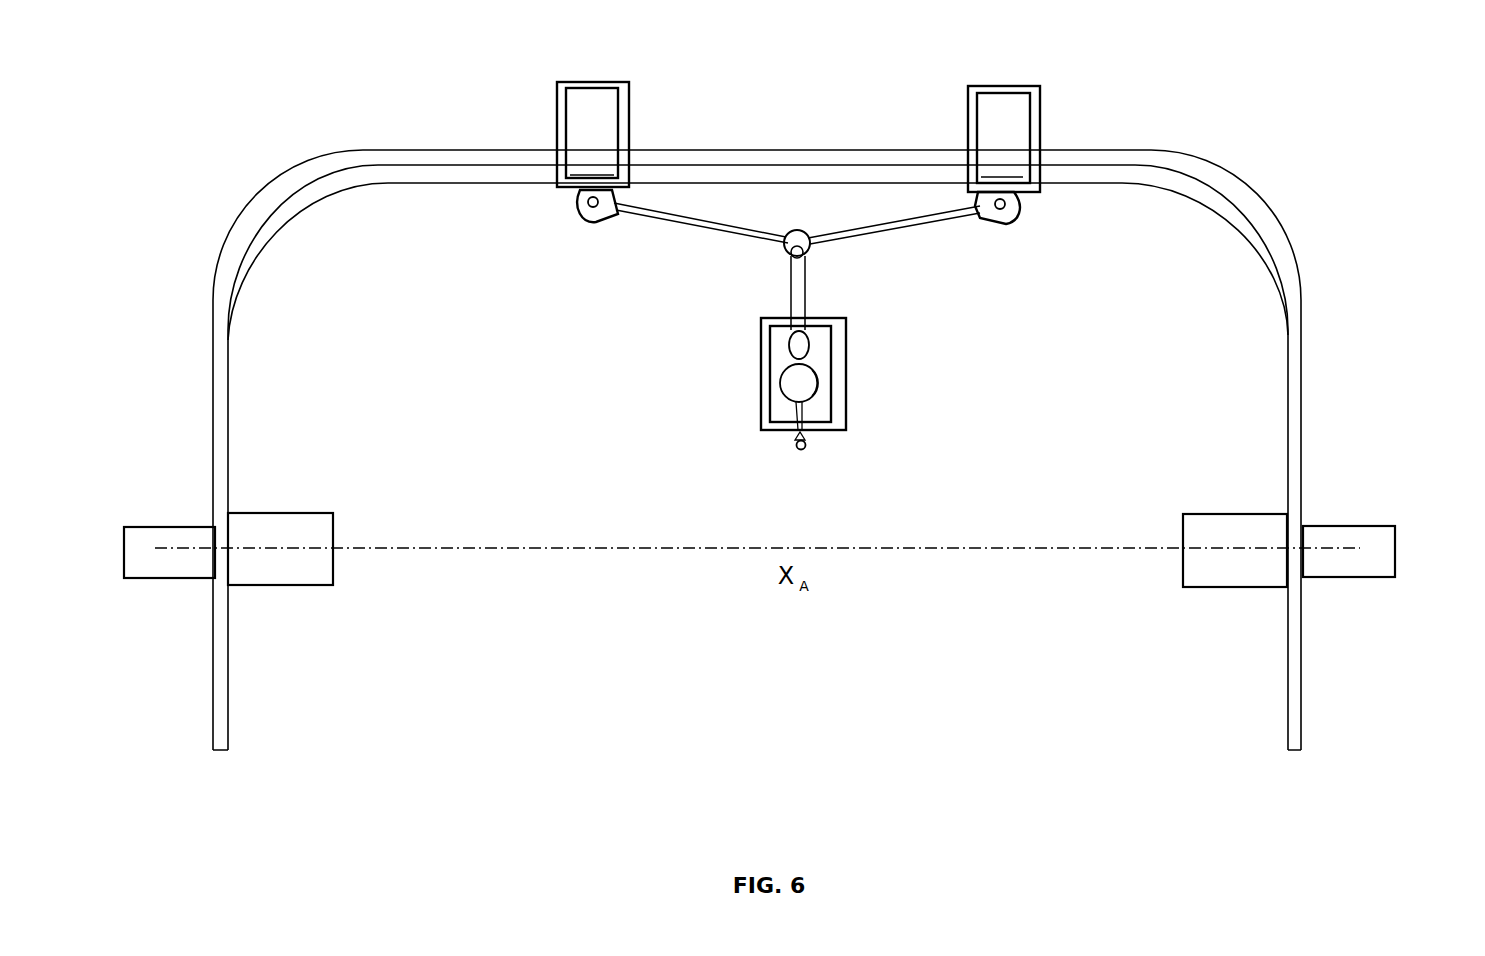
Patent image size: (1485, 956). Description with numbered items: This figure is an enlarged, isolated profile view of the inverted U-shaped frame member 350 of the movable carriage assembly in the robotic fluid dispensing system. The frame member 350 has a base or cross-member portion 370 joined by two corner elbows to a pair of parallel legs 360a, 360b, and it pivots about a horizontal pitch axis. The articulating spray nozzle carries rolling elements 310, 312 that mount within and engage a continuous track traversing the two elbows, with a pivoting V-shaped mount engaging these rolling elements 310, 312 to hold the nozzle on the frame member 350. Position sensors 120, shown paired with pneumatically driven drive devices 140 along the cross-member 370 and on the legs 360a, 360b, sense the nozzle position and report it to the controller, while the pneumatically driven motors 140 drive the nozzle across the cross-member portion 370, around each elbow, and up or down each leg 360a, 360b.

The position sensor 120 is at (617, 113).
The pneumatically driven drive device 140 is at (630, 161).
The rolling element 310 is at (578, 220).
The rolling element 312 is at (996, 226).
The inverted U-shaped frame member 350 is at (362, 148).
The parallel leg 360a is at (228, 443).
The parallel leg 360b is at (1296, 451).
The cross-member portion 370 is at (838, 160).